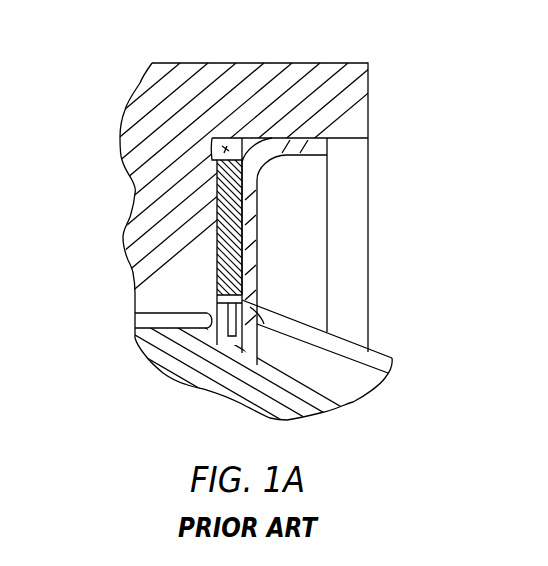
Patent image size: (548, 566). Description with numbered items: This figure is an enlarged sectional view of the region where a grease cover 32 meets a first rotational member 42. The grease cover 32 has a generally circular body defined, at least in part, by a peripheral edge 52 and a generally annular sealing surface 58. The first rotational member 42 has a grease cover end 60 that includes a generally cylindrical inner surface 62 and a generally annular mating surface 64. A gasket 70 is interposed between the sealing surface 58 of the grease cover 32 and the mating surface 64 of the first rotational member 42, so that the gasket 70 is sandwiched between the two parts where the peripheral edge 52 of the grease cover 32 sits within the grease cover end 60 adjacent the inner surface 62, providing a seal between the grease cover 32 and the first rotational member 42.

The grease cover end 60 is at (380, 90).
The first rotational member 42 is at (318, 77).
The mating surface 64 is at (245, 137).
The peripheral edge 52 is at (329, 157).
The inner surface 62 is at (212, 143).
The gasket 70 is at (218, 238).
The sealing surface 58 is at (205, 330).
The grease cover 32 is at (340, 342).